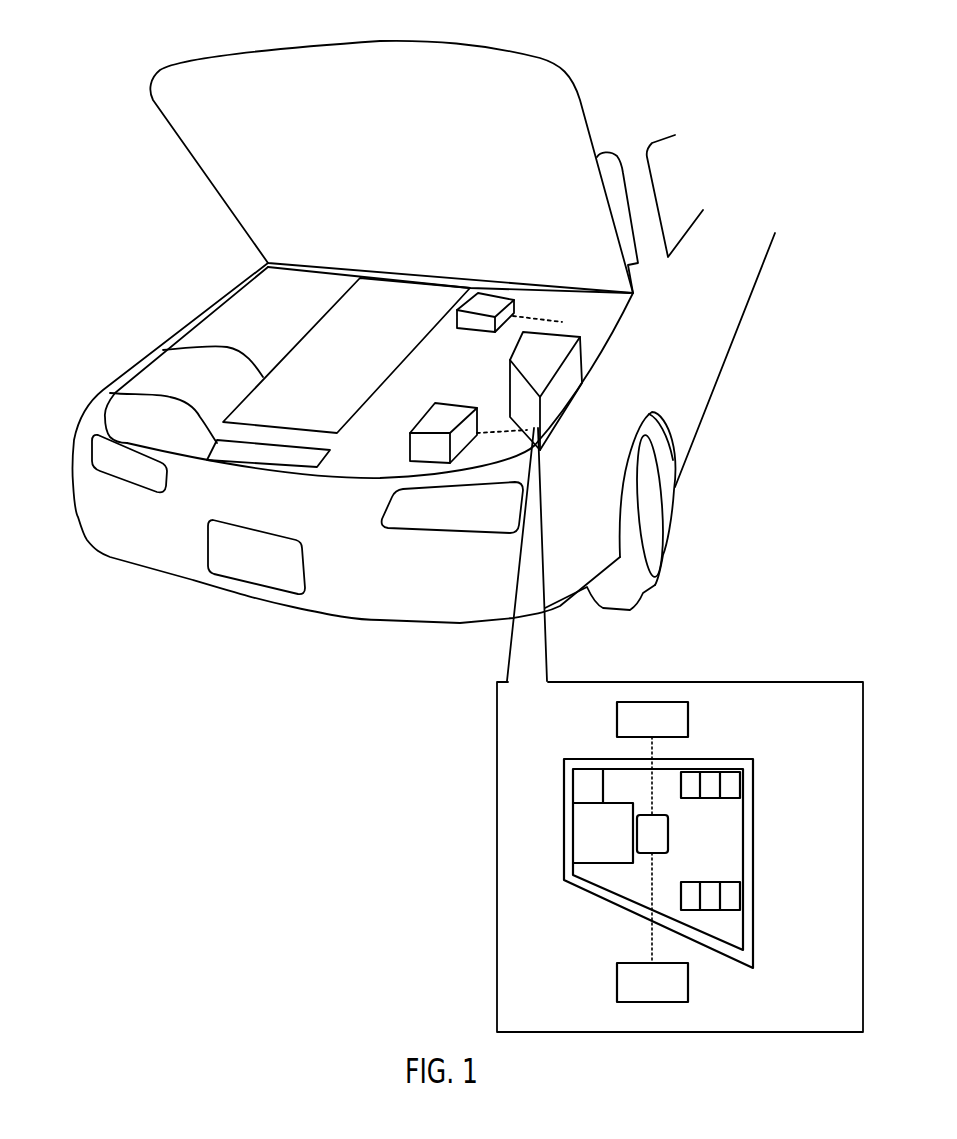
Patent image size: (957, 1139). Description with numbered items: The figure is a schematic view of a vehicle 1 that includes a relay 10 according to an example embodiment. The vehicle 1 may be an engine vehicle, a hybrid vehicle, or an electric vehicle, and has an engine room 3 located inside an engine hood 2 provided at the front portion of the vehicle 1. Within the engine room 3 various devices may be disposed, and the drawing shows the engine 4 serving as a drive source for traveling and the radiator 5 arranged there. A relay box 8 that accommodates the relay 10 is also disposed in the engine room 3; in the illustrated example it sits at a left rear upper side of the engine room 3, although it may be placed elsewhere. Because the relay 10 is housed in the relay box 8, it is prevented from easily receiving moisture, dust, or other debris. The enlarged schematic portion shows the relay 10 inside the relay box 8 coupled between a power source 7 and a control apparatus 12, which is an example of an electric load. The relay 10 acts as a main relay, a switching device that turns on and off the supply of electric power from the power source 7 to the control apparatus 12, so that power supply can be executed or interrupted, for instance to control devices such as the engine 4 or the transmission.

The vehicle 1 is at (86, 62).
The engine hood 2 is at (208, 178).
The engine room 3 is at (240, 323).
The engine 4 is at (163, 350).
The radiator 5 is at (110, 393).
The power source 7 is at (427, 453).
The relay box 8 is at (583, 353).
The relay 10 is at (668, 833).
The control apparatus 12 is at (513, 305).